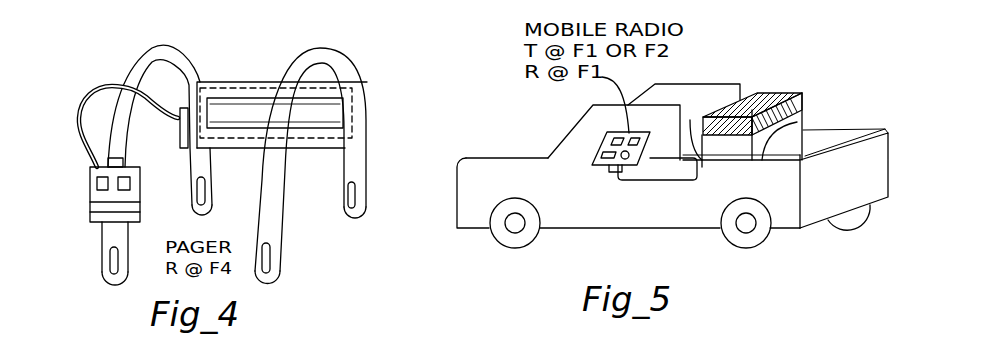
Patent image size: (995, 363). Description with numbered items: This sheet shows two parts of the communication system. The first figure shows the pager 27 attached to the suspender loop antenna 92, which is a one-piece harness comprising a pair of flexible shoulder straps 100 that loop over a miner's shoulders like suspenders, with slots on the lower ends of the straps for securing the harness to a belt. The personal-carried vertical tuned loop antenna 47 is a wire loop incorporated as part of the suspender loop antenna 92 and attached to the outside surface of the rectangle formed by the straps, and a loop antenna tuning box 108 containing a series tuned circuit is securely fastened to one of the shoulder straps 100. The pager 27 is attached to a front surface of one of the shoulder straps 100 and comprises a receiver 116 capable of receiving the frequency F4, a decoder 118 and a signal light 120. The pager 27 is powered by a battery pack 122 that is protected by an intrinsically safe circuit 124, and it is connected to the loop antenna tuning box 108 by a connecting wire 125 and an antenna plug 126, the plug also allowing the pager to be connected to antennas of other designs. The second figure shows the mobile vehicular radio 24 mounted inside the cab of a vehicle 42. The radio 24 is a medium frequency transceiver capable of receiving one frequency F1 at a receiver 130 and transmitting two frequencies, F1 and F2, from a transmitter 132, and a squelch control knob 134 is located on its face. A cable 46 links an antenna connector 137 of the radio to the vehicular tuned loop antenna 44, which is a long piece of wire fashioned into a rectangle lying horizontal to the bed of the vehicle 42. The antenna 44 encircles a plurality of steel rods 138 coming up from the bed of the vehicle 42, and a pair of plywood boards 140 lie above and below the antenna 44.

In FIG. 4, the suspender loop antenna 92 is at (301, 199).
In FIG. 4, the shoulder straps 100 is at (153, 51).
In FIG. 4, the personal-carried vertical tuned loop antenna 47 is at (255, 82).
In FIG. 4, the loop antenna tuning box 108 is at (213, 110).
In FIG. 4, the connecting wire 125 is at (86, 99).
In FIG. 4, the antenna plug 126 is at (179, 119).
In FIG. 4, the pager 27 is at (90, 172).
In FIG. 4, the signal light 120 is at (124, 162).
In FIG. 4, the receiver 116 is at (94, 190).
In FIG. 4, the decoder 118 is at (131, 183).
In FIG. 4, the battery pack 122 is at (93, 214).
In FIG. 4, the intrinsically safe circuit 124 is at (134, 204).
In FIG. 5, the vehicle 42 is at (487, 157).
In FIG. 5, the mobile vehicular radio 24 is at (601, 146).
In FIG. 5, the receiver 130 is at (615, 129).
In FIG. 5, the transmitter 132 is at (634, 137).
In FIG. 5, the squelch control knob 134 is at (647, 158).
In FIG. 5, the antenna connector 137 is at (611, 170).
In FIG. 5, the cable 46 is at (645, 180).
In FIG. 5, the vehicular tuned loop antenna 44 is at (802, 108).
In FIG. 5, the steel rods 138 is at (690, 120).
In FIG. 5, the plywood boards 140 is at (778, 100).